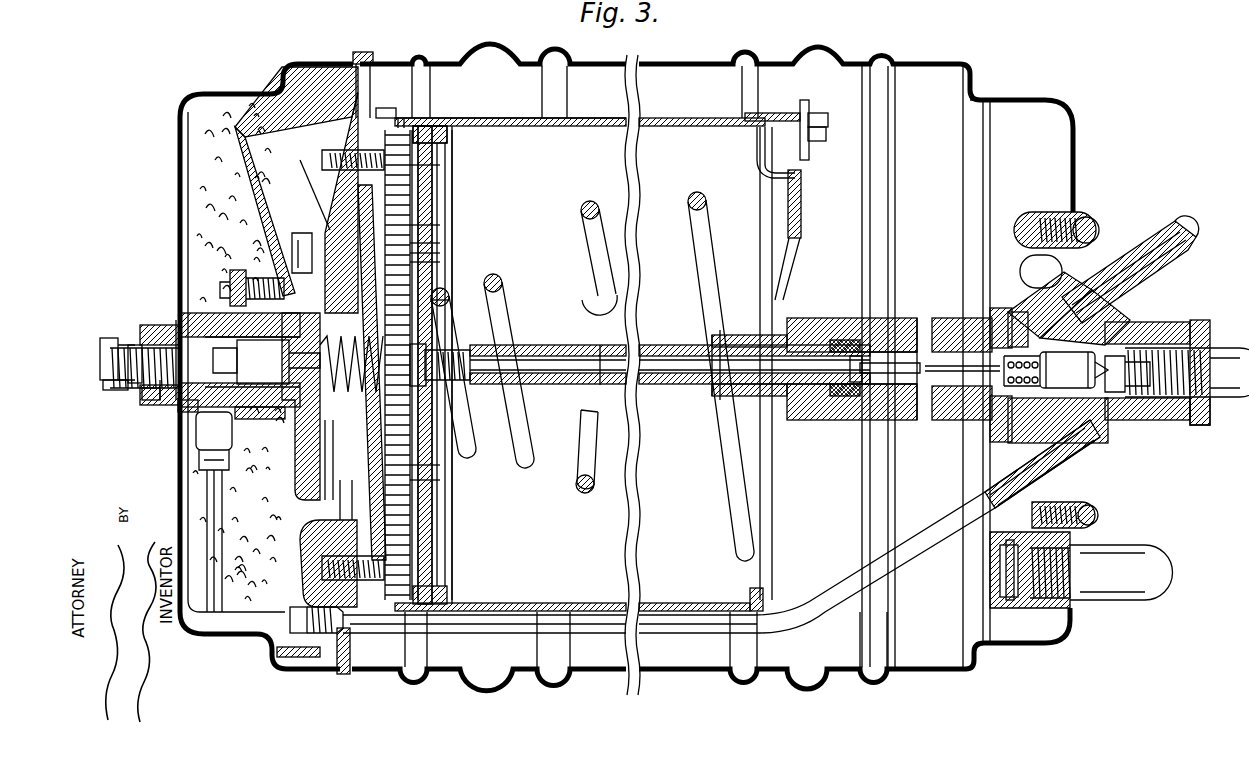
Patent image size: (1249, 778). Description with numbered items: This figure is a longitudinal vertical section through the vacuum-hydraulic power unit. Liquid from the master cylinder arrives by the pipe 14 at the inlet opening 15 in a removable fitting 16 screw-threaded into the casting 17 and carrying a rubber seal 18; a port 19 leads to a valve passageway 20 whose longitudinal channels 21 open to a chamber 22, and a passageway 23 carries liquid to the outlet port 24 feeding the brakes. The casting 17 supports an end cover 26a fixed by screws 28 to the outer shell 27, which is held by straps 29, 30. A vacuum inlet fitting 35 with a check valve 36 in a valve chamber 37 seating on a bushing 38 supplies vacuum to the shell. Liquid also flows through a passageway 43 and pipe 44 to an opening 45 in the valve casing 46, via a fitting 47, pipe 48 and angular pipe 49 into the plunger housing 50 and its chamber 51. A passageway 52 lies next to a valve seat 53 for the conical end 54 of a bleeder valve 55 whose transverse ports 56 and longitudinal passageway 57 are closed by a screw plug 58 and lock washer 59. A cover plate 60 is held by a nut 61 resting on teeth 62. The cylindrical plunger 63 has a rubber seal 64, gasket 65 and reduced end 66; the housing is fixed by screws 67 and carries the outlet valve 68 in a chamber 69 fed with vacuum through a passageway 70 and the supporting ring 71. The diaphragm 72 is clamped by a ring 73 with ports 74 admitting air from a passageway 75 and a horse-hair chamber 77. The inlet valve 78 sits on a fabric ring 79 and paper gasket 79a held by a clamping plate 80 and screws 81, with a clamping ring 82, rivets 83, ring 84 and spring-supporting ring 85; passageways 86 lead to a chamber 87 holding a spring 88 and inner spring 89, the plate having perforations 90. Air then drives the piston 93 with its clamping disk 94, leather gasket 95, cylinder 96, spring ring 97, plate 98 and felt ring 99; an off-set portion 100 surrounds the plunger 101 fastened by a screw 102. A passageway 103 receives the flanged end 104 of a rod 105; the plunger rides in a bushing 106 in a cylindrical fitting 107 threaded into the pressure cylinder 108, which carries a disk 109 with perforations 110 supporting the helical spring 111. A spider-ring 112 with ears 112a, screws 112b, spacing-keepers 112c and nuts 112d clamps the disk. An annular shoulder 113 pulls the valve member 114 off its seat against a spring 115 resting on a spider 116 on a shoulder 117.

The pipe 14 is at (1218, 398).
The inlet opening 15 is at (1210, 340).
The removable fitting 16 is at (1192, 426).
The casting 17 is at (1040, 300).
The rubber seal 18 is at (1138, 325).
The port 19 is at (1122, 372).
The valve passageway 20 is at (1105, 425).
The longitudinal channels 21 is at (1085, 317).
The chamber 22 is at (1058, 377).
The passageway 23 is at (1050, 305).
The outlet port 24 is at (1075, 285).
The end cover 26a is at (1040, 101).
The outer shell 27 is at (710, 62).
The screws 28 is at (1084, 220).
The strap 29 is at (824, 52).
The strap 30 is at (487, 45).
The vacuum inlet fitting 35 is at (1072, 610).
The check valve 36 is at (1004, 572).
The valve chamber 37 is at (1012, 610).
The bushing 38 is at (1000, 562).
The passageway 43 is at (1092, 438).
The pipe 44 is at (938, 538).
The opening 45 is at (345, 675).
The valve casing 46 is at (283, 218).
The fitting 47 is at (318, 640).
The pipe 48 is at (224, 497).
The angular pipe 49 is at (200, 440).
The plunger housing 50 is at (182, 420).
The chamber 51 is at (205, 322).
The passageway 52 is at (188, 325).
The valve seat 53 is at (150, 385).
The conical end 54 is at (163, 392).
The bleeder valve 55 is at (128, 345).
The transverse ports 56 is at (135, 377).
The longitudinal passageway 57 is at (146, 343).
The screw plug 58 is at (106, 345).
The lock washer 59 is at (104, 370).
The cover plate 60 is at (180, 214).
The nut 61 is at (166, 335).
The teeth 62 is at (290, 80).
The cylindrical plunger 63 is at (263, 362).
The rubber seal 64 is at (252, 369).
The gasket 65 is at (290, 345).
The reduced end 66 is at (326, 370).
The screws 67 is at (226, 280).
The outlet valve 68 is at (300, 236).
The chamber 69 is at (325, 492).
The passageway 70 is at (262, 172).
The supporting ring 71 is at (363, 53).
The diaphragm 72 is at (343, 534).
The ring 73 is at (345, 212).
The ports 74 is at (318, 215).
The passageway 75 is at (322, 566).
The chamber 77 is at (244, 571).
The inlet valve 78 is at (440, 255).
The fabric ring 79 is at (434, 245).
The paper gasket 79a is at (438, 226).
The clamping plate 80 is at (432, 270).
The screws 81 is at (418, 166).
The clamping ring 82 is at (436, 466).
The rivets 83 is at (440, 306).
The ring 84 is at (446, 333).
The spring-supporting ring 85 is at (300, 300).
The passageways 86 is at (432, 482).
The chamber 87 is at (380, 420).
The spring 88 is at (497, 330).
The inner spring 89 is at (399, 356).
The perforations 90 is at (432, 265).
The piston 93 is at (468, 208).
The clamping disk 94 is at (428, 126).
The leather gasket 95 is at (401, 118).
The cylinder 96 is at (510, 119).
The spring ring 97 is at (388, 119).
The plate 98 is at (455, 141).
The felt ring 99 is at (445, 126).
The circular off-set portion 100 is at (445, 388).
The plunger 101 is at (598, 347).
The screw 102 is at (532, 346).
The longitudinal passageway 103 is at (900, 318).
The flanged end 104 is at (866, 376).
The rod 105 is at (960, 366).
The bushing 106 is at (730, 335).
The cylindrical fitting 107 is at (722, 404).
The pressure cylinder 108 is at (832, 318).
The disk 109 is at (790, 163).
The perforations 110 is at (790, 258).
The helical spring 111 is at (700, 205).
The spider-ring 112 is at (802, 218).
The ears 112a is at (810, 114).
The screws 112b is at (826, 137).
The spacing-keepers 112c is at (780, 113).
The nuts 112d is at (826, 126).
The annular shoulder 113 is at (872, 365).
The valve member 114 is at (1074, 370).
The spring 115 is at (962, 418).
The spider 116 is at (998, 318).
The shoulder 117 is at (1008, 412).